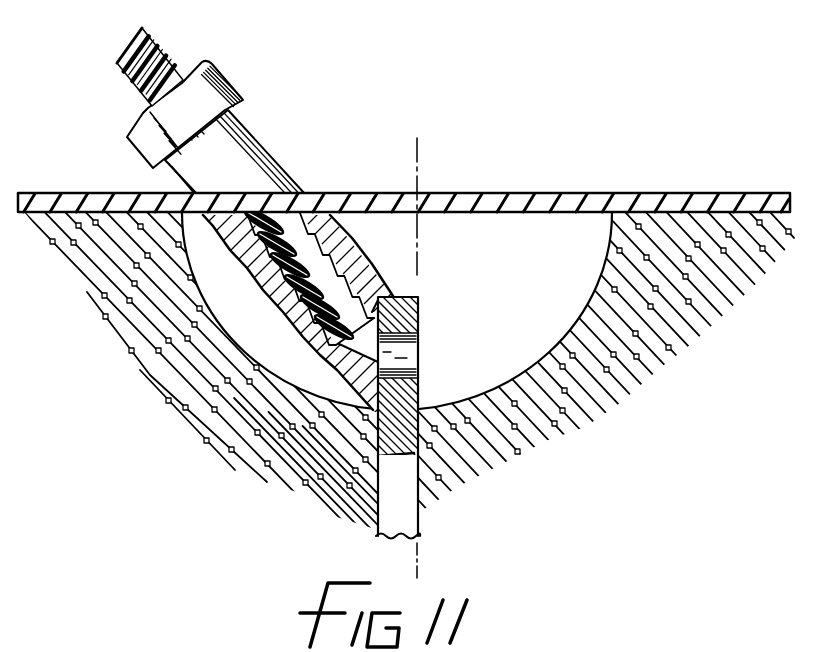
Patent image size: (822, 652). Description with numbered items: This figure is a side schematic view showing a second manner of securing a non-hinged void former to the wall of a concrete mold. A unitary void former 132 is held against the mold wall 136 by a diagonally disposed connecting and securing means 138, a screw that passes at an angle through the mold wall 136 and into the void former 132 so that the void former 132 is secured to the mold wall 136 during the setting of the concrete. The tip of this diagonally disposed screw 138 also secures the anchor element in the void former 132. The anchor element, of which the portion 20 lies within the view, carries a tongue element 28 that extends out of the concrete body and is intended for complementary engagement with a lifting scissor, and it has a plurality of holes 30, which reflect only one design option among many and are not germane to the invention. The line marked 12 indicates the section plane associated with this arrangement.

The section line 12- 12 is at (433, 567).
The anchor post 20 is at (386, 520).
The tongue element 28 is at (418, 300).
The holes 30 is at (404, 361).
The unitary void former 132 is at (508, 272).
The mold wall 136 is at (668, 211).
The diagonally disposed connecting and securing means 138 is at (150, 46).